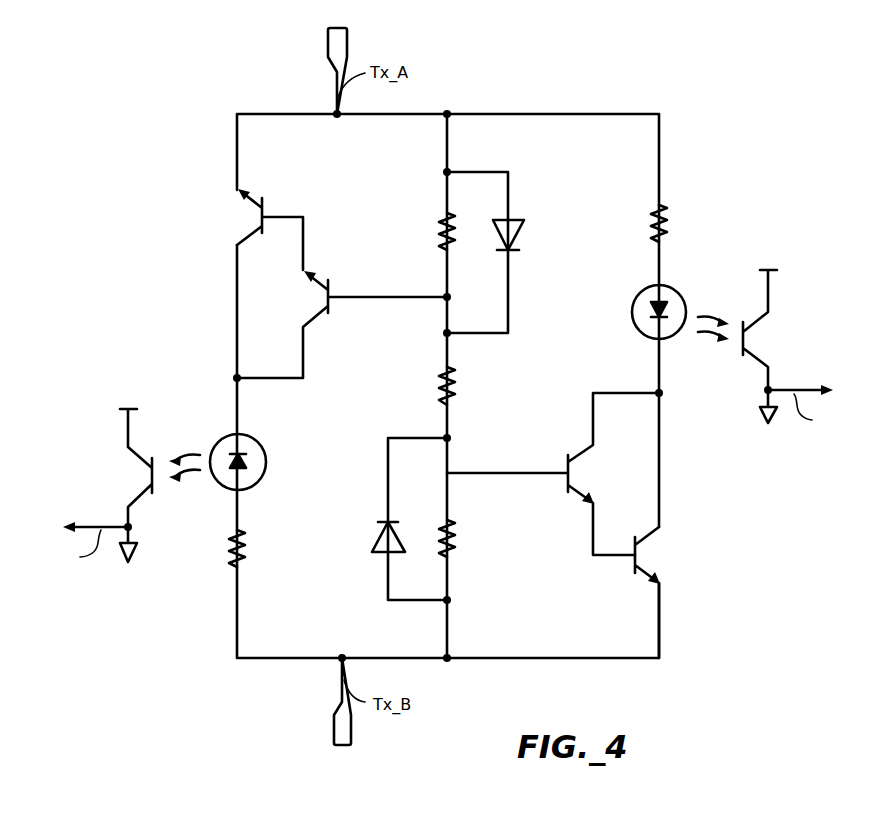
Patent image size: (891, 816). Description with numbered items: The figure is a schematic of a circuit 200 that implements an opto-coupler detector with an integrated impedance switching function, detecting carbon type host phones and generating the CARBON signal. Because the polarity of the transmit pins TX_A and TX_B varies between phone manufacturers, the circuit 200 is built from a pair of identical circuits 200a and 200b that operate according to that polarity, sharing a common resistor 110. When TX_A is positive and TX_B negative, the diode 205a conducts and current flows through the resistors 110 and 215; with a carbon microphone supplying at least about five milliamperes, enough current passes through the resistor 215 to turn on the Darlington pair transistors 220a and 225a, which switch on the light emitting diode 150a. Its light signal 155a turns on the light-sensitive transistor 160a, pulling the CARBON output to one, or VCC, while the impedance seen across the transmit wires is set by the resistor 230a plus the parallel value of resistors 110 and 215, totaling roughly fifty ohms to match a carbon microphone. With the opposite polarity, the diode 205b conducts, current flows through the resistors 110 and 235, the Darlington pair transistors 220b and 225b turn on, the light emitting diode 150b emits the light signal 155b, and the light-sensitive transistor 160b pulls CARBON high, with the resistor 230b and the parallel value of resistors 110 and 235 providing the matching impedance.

The circuit 200 is at (530, 52).
The identical circuit 200a is at (553, 254).
The identical circuit 200b is at (342, 518).
The resistor 110 is at (438, 385).
The light emitting diode 150a is at (651, 318).
The light emitting diode 150b is at (247, 458).
The light signal 155a is at (733, 283).
The light signal 155b is at (179, 456).
The light-sensitive transistor 160a is at (753, 322).
The light-sensitive transistor 160b is at (141, 495).
The diode 205a is at (521, 233).
The diode 205b is at (373, 537).
The resistor 215 is at (462, 535).
The Darlington pair transistor 220a is at (583, 450).
The Darlington pair transistor 220b is at (320, 275).
The Darlington pair transistor 225a is at (652, 582).
The Darlington pair transistor 225b is at (257, 232).
The resistor 230a is at (670, 220).
The resistor 230b is at (229, 551).
The resistor 235 is at (438, 234).